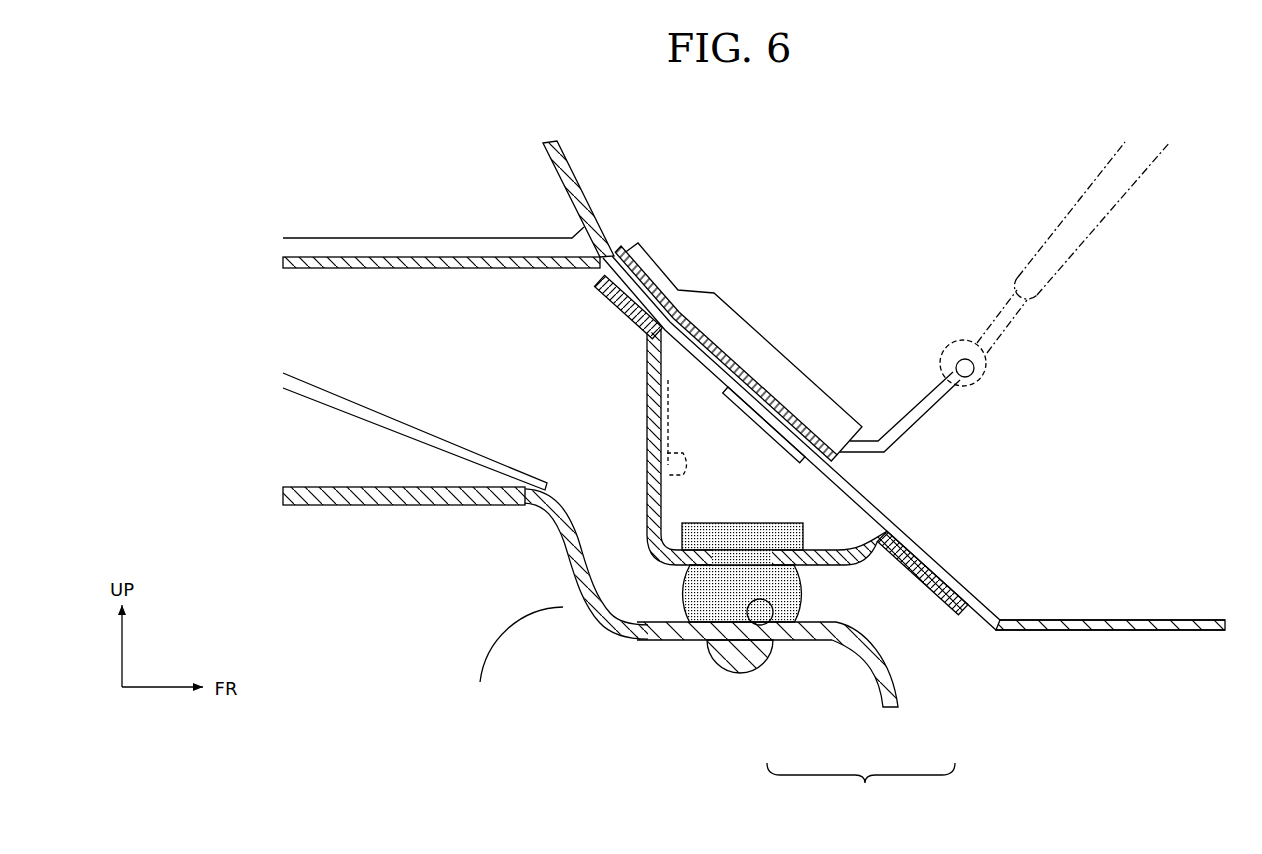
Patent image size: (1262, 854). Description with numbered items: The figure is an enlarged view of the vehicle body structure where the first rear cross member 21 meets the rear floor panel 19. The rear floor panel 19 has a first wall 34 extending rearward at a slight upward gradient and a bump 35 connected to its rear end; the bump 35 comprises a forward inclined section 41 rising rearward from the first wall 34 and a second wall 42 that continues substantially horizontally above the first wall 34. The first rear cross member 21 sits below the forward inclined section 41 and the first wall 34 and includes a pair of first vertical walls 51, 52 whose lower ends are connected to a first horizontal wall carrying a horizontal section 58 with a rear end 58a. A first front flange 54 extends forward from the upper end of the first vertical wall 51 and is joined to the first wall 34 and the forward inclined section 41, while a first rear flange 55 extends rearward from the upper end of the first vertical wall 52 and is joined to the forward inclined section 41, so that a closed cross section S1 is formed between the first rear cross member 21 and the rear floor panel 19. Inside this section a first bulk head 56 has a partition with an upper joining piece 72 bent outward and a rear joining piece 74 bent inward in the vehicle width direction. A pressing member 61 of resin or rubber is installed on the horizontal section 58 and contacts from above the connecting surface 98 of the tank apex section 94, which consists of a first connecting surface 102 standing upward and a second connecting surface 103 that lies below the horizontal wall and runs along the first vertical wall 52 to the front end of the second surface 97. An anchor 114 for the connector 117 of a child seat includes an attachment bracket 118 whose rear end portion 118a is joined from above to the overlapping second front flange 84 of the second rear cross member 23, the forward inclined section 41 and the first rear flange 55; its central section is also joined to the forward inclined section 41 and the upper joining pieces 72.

The rear floor panel 19 is at (1168, 612).
The first rear cross member 21 is at (636, 498).
The second rear cross member 23 is at (573, 178).
The first wall 34 is at (1100, 618).
The bump 35 is at (468, 255).
The forward inclined section 41 is at (863, 489).
The second wall 42 is at (379, 255).
The first vertical wall 51 is at (880, 550).
The first vertical wall 52 is at (647, 372).
The first front flange 54 is at (932, 576).
The first rear flange 55 is at (637, 312).
The first bulk head 56 is at (700, 435).
The horizontal section 58 is at (826, 565).
The rear end 58a is at (662, 565).
The pressing member 61 is at (714, 612).
The upper joining piece 72 is at (782, 440).
The rear joining piece 74 is at (655, 478).
The second front flange 84 is at (660, 302).
The tank apex section 94 is at (356, 485).
The second surface 97 is at (436, 486).
The connecting surface 98 is at (861, 791).
The first connecting surface 102 is at (887, 668).
The second connecting surface 103 is at (768, 640).
The anchor 114 is at (921, 386).
The connector 117 is at (1047, 237).
The attachment bracket 118 is at (793, 362).
The rear end portion 118a is at (658, 300).
The closed cross section S1 is at (643, 520).